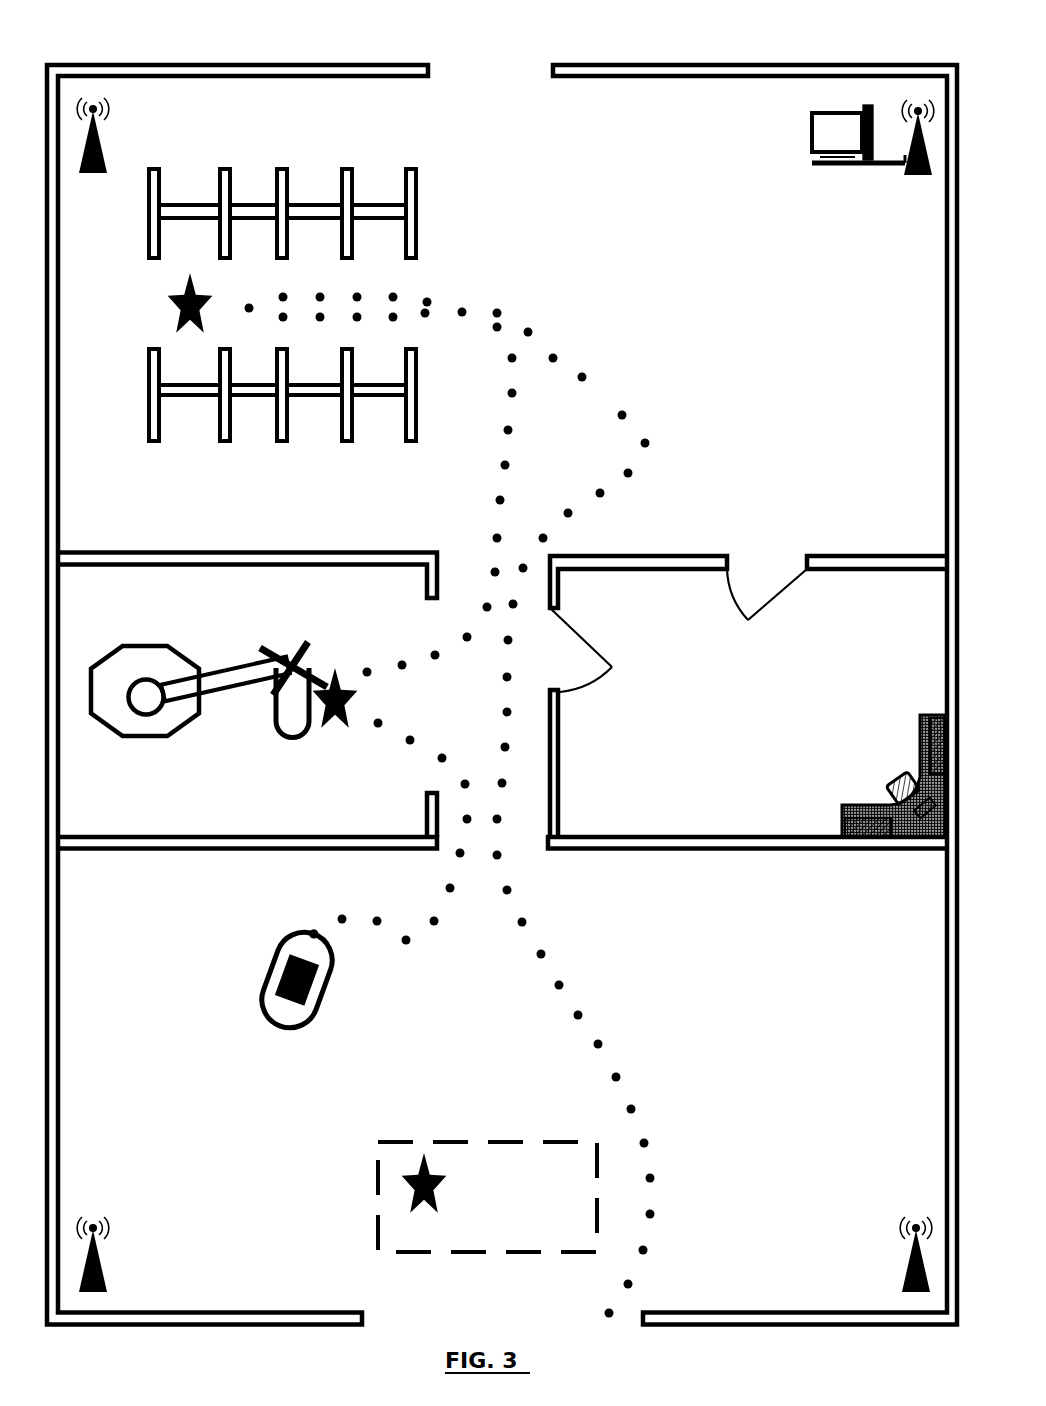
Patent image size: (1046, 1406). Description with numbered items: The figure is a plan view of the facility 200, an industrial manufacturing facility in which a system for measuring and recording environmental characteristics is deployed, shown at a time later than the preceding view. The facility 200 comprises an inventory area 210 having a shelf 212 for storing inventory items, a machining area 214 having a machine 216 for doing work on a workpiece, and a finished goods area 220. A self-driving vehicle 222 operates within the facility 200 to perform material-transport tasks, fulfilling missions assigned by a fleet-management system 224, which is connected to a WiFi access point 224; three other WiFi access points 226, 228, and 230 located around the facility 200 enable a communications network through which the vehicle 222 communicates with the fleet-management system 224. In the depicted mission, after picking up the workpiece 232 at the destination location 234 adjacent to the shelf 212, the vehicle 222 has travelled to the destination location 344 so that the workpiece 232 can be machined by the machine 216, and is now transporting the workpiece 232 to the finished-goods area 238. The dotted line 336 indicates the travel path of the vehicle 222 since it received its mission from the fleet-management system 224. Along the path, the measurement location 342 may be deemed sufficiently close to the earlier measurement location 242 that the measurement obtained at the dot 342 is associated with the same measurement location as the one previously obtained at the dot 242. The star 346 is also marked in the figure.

The facility 200 is at (511, 24).
The inventory area 210 is at (511, 284).
The shelf 212 is at (415, 212).
The machining area 214 is at (272, 799).
The machine 216 is at (147, 647).
The finished goods area 220 is at (511, 1045).
The self-driving vehicle 222 is at (812, 137).
The fleet-management system 224 is at (918, 173).
The WiFi access point 226 is at (105, 152).
The WiFi access point 228 is at (103, 1266).
The WiFi access point 230 is at (908, 1258).
The workpiece 232 is at (313, 972).
The destination location 234 is at (177, 313).
The finished-goods area 238 is at (511, 1207).
The measurement location 242 is at (513, 603).
The dotted line 336 is at (652, 1033).
The measurement location 342 is at (487, 607).
The destination location 344 is at (325, 727).
The destination marker 346 is at (410, 1192).